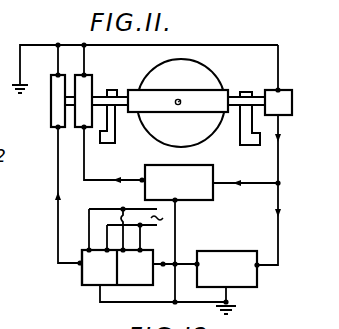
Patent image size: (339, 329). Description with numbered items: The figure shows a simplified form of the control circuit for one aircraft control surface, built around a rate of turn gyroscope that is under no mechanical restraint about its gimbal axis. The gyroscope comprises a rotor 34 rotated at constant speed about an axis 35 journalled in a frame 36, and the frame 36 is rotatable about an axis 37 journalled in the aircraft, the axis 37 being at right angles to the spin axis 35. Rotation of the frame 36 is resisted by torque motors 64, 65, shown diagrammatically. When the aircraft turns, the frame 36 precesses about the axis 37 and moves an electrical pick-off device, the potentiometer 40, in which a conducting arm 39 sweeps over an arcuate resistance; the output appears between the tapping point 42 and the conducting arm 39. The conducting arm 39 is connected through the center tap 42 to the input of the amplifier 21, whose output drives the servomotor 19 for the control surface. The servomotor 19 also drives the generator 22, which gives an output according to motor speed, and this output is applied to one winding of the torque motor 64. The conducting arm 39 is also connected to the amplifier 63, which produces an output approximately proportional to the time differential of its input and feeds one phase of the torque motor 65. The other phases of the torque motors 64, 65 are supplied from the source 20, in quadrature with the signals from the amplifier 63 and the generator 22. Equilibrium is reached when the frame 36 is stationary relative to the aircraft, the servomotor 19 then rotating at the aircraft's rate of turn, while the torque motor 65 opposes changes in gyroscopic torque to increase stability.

The servomotor 19 is at (140, 277).
The source 20 is at (165, 220).
The amplifier 21 is at (219, 262).
The generator 22 is at (93, 268).
The rotor 34 is at (210, 86).
The axis 35 is at (176, 105).
The frame 36 is at (202, 106).
The axis 37 is at (112, 90).
The conducting arm 39 is at (280, 63).
The potentiometer 40 is at (278, 108).
The center tap 42 is at (280, 158).
The amplifier 63 is at (200, 190).
The torque motor 64 is at (55, 107).
The torque motor 65 is at (78, 127).